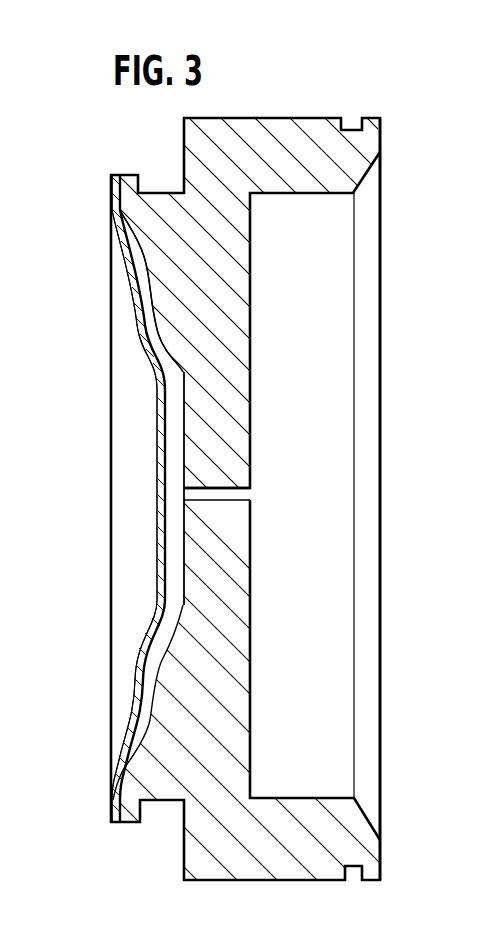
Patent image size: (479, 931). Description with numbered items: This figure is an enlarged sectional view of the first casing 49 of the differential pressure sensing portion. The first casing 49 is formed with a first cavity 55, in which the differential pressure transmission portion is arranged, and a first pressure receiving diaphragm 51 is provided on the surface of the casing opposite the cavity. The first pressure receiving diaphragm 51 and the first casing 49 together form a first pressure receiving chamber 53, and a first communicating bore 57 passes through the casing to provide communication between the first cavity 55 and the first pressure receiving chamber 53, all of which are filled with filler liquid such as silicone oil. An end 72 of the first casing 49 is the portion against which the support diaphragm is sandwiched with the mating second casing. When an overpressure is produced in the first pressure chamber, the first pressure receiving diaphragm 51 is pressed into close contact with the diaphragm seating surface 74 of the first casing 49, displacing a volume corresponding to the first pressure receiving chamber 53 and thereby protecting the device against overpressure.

The first casing 49 is at (290, 117).
The end of the first casing 72 is at (381, 126).
The first cavity 55 is at (308, 268).
The first communicating bore 57 is at (239, 497).
The first pressure receiving chamber 53 is at (165, 406).
The first pressure receiving diaphragm 51 is at (133, 672).
The diaphragm seating surface 74 is at (158, 335).